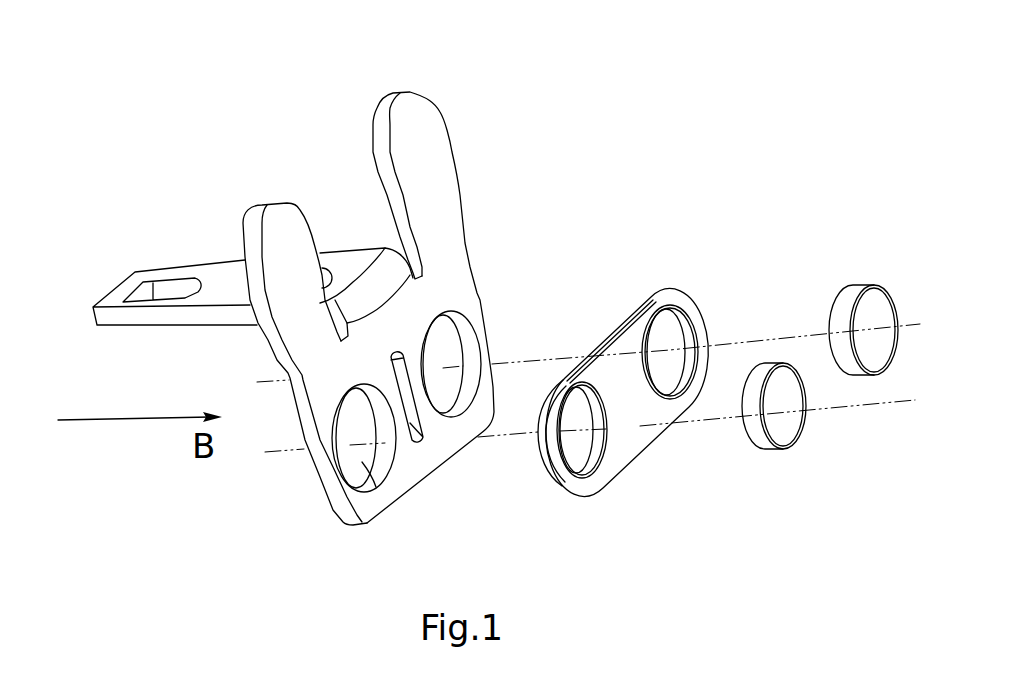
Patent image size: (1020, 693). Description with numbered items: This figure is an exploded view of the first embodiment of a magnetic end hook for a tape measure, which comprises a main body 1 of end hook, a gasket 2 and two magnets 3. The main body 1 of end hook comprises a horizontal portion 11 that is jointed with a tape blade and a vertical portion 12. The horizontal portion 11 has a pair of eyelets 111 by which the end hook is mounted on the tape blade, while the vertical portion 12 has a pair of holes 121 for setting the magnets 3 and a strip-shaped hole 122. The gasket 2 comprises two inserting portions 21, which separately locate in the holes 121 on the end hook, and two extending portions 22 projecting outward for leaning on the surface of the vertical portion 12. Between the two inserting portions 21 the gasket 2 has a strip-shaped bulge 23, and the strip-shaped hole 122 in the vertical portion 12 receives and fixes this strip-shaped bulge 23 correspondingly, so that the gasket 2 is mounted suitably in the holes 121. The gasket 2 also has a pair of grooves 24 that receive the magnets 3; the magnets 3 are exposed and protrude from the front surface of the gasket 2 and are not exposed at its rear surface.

The main body of end hook 1 is at (333, 140).
The horizontal portion 11 is at (220, 277).
The eyelets 111 is at (160, 292).
The vertical portion 12 is at (455, 287).
The holes 121 is at (445, 380).
The strip-shaped hole 122 is at (417, 423).
The gasket 2 is at (677, 297).
The inserting portions 21 is at (536, 429).
The extending portions 22 is at (577, 483).
The strip-shaped bulge 23 is at (588, 343).
The grooves 24 is at (706, 353).
The magnets 3 is at (873, 317).